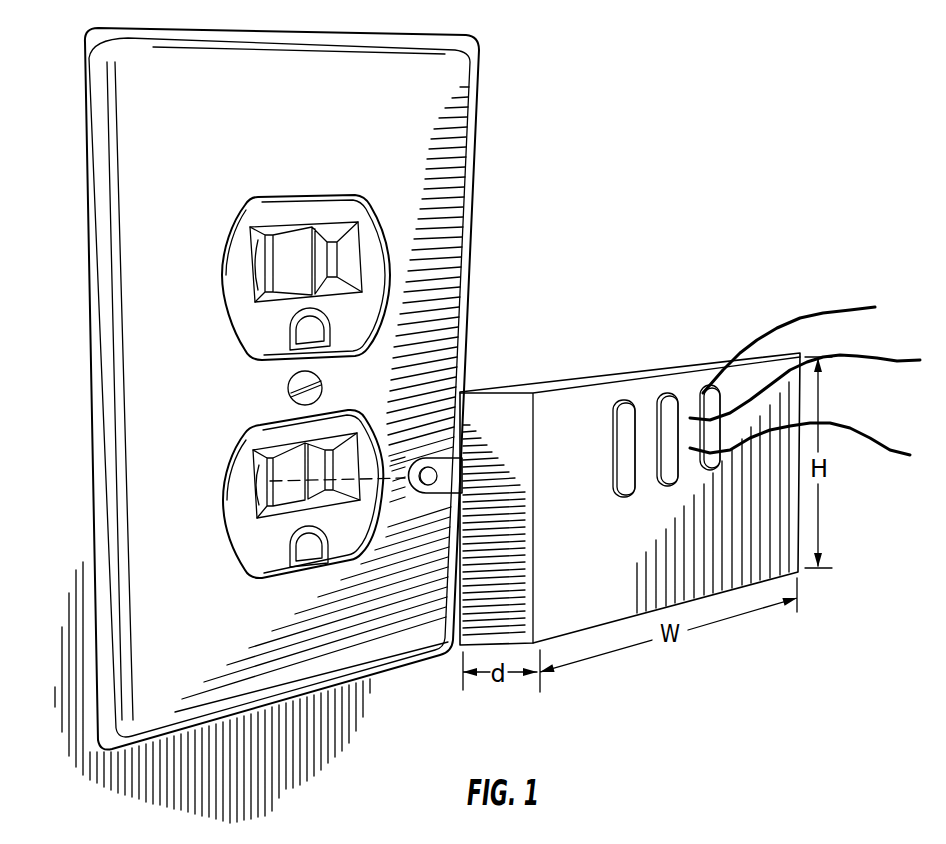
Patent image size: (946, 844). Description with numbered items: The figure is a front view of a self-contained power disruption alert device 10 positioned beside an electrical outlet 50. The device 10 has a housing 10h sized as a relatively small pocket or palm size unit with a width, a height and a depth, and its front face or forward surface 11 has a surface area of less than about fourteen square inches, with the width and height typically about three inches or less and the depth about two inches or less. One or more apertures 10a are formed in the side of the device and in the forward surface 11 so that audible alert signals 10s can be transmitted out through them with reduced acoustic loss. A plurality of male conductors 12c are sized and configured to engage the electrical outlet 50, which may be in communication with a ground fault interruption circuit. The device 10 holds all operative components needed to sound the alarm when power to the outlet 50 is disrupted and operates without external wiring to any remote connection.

The electrical outlet 50 is at (420, 142).
The power disruption alert device 10 is at (649, 483).
The housing 10h is at (565, 400).
The apertures 10a is at (713, 387).
The audible alert signals 10s is at (807, 315).
The forward surface 11 is at (710, 570).
The male conductors 12c is at (446, 494).